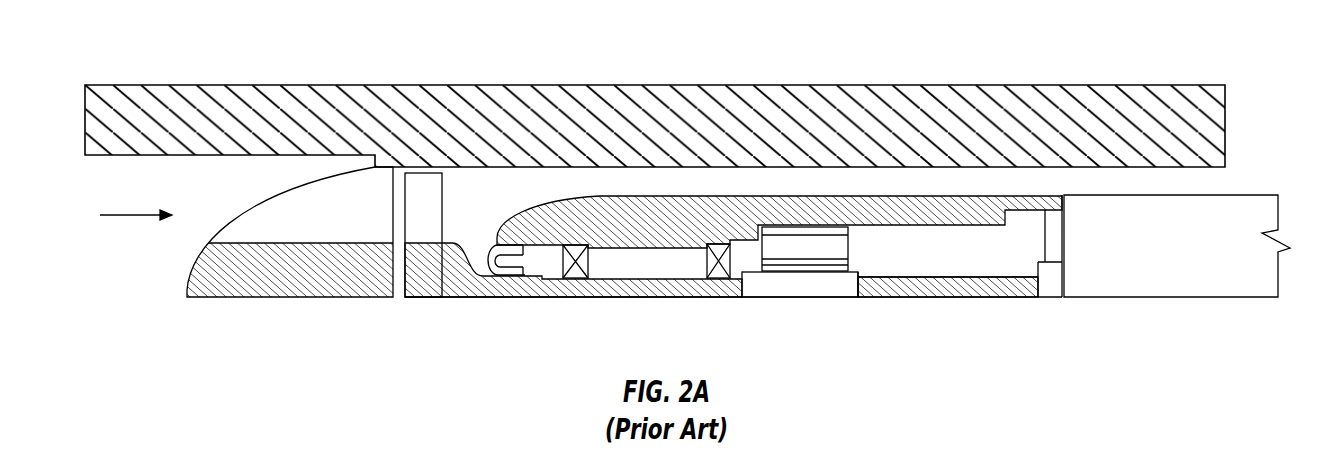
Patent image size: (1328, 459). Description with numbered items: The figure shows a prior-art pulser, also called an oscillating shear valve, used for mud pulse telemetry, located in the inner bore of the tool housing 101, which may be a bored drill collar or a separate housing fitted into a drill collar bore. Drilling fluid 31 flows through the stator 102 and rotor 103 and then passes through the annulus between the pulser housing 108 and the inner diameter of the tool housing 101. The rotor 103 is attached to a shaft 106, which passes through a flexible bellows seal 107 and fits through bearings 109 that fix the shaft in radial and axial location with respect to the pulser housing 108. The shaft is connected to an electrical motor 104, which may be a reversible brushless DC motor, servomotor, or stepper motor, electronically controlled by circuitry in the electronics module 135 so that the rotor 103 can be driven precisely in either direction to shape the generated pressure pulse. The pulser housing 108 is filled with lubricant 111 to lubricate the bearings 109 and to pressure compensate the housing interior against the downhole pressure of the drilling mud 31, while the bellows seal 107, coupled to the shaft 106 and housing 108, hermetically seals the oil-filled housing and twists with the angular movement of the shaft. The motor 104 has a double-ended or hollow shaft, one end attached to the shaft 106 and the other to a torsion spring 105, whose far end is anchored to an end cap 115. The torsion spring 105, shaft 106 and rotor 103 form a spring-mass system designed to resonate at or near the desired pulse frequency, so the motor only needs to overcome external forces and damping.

The drilling fluid 31 is at (118, 217).
The tool housing 101 is at (202, 85).
The stator 102 is at (265, 198).
The rotor 103 is at (427, 173).
The electrical motor 104 is at (805, 230).
The torsion spring 105 is at (967, 275).
The shaft 106 is at (462, 252).
The flexible bellows seal 107 is at (503, 260).
The pulser housing 108 is at (663, 196).
The bearings 109 is at (720, 247).
The lubricant 111 is at (917, 264).
The end cap 115 is at (1055, 242).
The electronics module 135 is at (1220, 195).